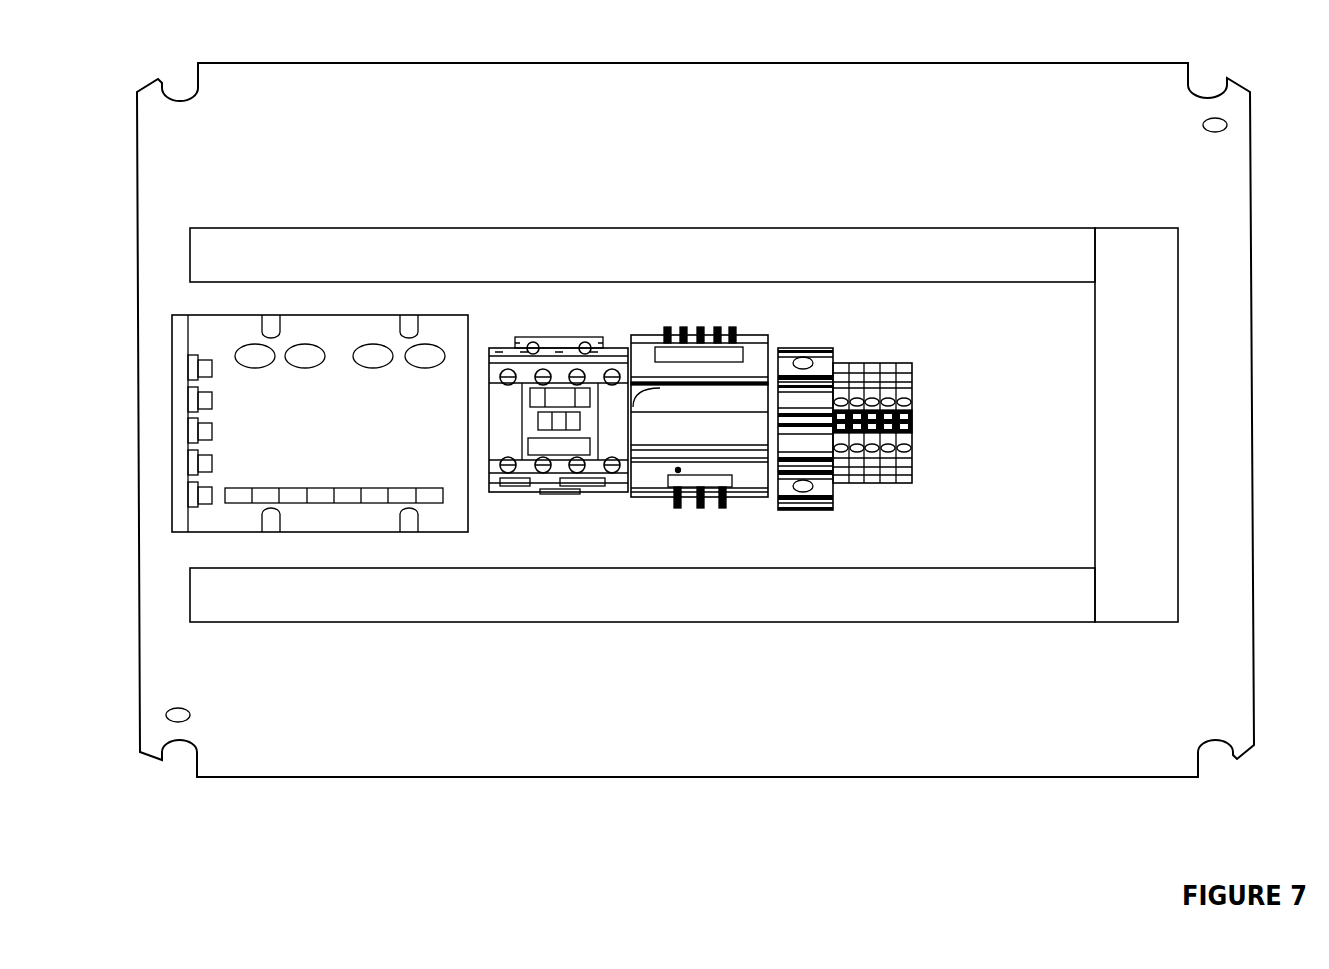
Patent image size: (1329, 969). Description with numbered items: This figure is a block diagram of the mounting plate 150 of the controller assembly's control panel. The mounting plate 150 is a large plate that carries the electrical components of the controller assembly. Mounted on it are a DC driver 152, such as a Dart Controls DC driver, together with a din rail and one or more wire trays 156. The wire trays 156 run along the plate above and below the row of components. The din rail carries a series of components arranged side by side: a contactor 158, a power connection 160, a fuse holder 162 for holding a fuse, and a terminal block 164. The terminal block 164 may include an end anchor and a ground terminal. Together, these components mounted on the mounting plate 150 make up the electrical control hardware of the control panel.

The mounting plate 150 is at (1130, 62).
The DC driver 152 is at (372, 313).
The wire tray 156 is at (1055, 228).
The contactor 158 is at (552, 335).
The power connection 160 is at (682, 503).
The fuse holder 162 is at (805, 348).
The terminal block 164 is at (882, 363).